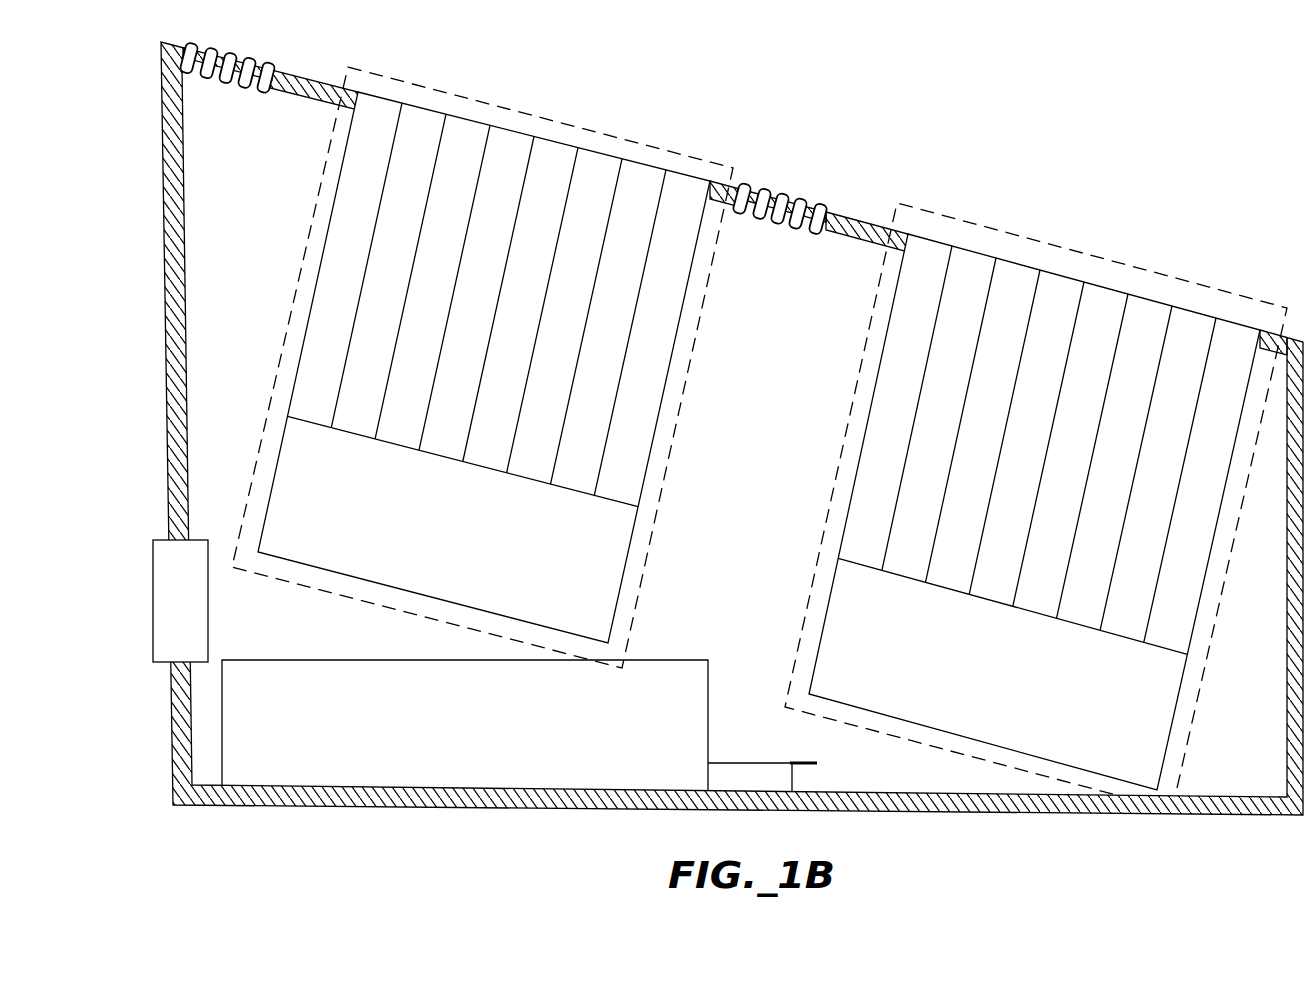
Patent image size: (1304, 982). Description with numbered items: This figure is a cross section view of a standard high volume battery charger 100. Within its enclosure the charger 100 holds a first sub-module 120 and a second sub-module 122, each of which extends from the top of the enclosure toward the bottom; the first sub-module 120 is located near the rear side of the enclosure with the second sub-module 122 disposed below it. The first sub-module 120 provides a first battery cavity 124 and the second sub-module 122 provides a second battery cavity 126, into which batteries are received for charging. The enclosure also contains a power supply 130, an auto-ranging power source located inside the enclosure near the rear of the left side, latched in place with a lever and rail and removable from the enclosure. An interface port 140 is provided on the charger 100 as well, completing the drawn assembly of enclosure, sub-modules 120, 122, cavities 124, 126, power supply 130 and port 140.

The standard high volume battery charger 100 is at (1145, 128).
The first sub-module 120 is at (292, 68).
The second sub-module 122 is at (838, 203).
The first battery cavity 124 is at (552, 115).
The second battery cavity 126 is at (1085, 250).
The power supply 130 is at (345, 763).
The interface port 140 is at (153, 600).